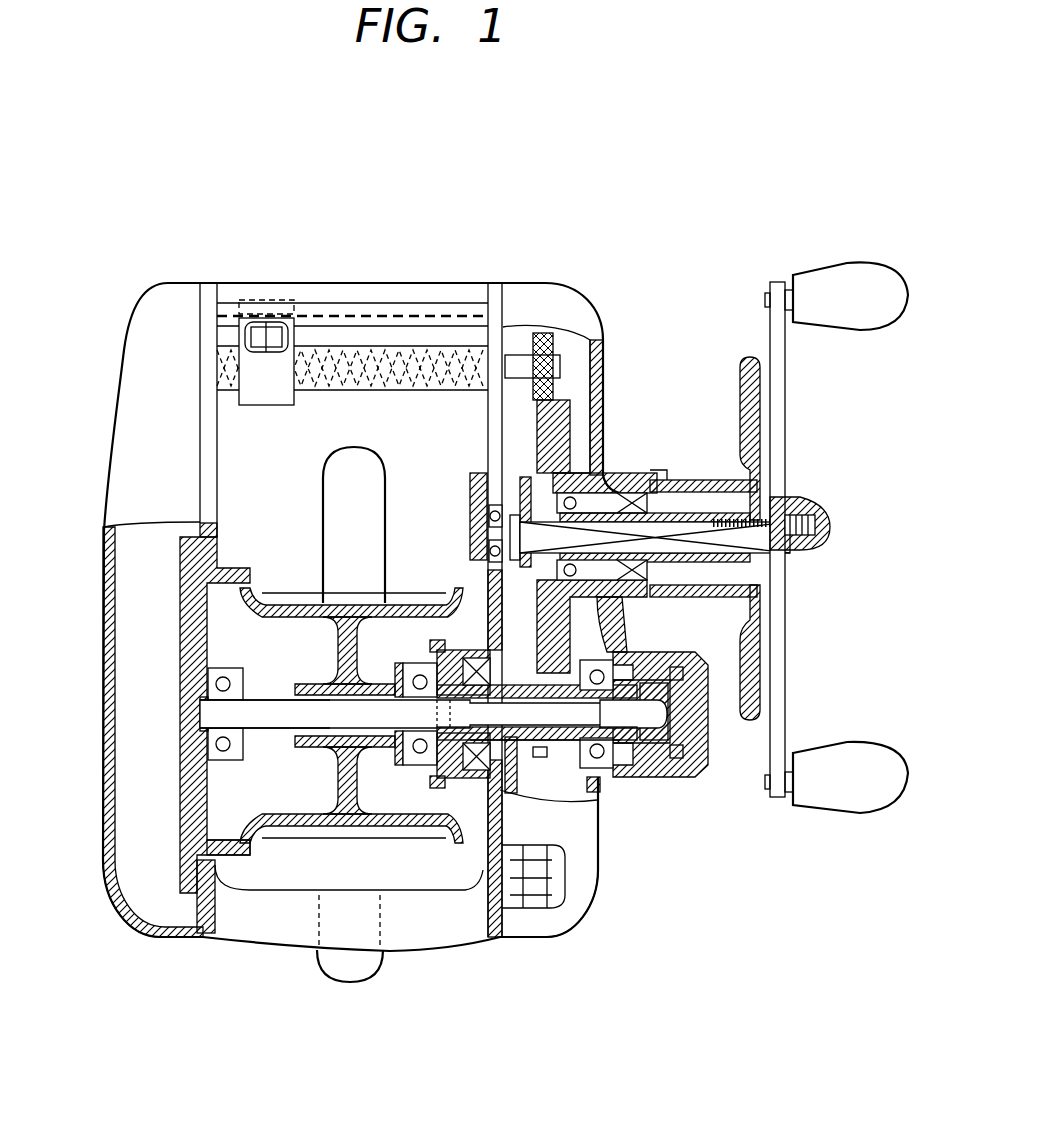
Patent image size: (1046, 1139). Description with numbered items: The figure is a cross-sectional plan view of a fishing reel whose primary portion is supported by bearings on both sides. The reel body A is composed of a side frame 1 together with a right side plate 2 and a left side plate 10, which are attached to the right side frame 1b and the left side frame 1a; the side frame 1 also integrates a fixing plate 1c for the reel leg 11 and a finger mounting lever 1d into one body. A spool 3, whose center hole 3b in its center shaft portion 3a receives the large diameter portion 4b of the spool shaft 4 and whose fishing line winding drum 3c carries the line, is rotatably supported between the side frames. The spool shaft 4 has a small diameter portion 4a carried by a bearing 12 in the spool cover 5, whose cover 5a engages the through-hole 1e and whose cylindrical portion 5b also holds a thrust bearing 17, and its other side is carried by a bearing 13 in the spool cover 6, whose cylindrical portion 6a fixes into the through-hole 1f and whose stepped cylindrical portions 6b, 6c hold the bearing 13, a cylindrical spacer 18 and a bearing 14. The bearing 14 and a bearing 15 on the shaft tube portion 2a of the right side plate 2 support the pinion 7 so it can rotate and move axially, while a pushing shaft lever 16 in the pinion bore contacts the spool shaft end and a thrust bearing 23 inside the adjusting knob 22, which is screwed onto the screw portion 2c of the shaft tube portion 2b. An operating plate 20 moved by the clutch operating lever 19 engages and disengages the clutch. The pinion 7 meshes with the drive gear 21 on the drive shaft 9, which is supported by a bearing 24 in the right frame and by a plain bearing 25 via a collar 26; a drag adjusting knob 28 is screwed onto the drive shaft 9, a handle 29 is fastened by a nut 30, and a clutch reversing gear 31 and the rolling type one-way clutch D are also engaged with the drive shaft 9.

The reel body A is at (218, 258).
The side frame 1 is at (208, 282).
The left side frame 1a is at (200, 300).
The right side frame 1b is at (495, 300).
The fixing plate 1c is at (340, 838).
The finger mounting lever 1d is at (223, 938).
The through-hole 1e is at (200, 560).
The through-hole 1f is at (700, 613).
The right side plate 2 is at (553, 285).
The shaft tube portion 2a is at (588, 893).
The shaft tube portion 2b is at (712, 680).
The screw portion 2c is at (670, 745).
The spool 3 is at (307, 598).
The center shaft portion 3a is at (302, 830).
The center hole 3b is at (283, 697).
The fishing line winding drum 3c is at (352, 596).
The spool shaft 4 is at (265, 745).
The small diameter portion 4a is at (212, 735).
The large diameter portion 4b is at (290, 745).
The spool cover 5 is at (190, 607).
The cover 5a is at (200, 520).
The cylindrical portion 5b is at (210, 780).
The spool cover 6 is at (466, 569).
The cylindrical portion 6a is at (662, 640).
The cylindrical portion 6b is at (420, 772).
The cylindrical portion 6c is at (437, 780).
The pinion 7 is at (543, 762).
The drive shaft 9 is at (697, 515).
The left side plate 10 is at (137, 320).
The reel leg 11 is at (356, 984).
The bearing 12 is at (212, 682).
The bearing 13 is at (400, 590).
The bearing 14 is at (465, 790).
The bearing 15 is at (598, 820).
The pushing shaft lever 16 is at (614, 790).
The thrust bearing 17 is at (200, 710).
The cylindrical spacer 18 is at (433, 596).
The clutch operating lever 19 is at (560, 885).
The operating plate 20 is at (528, 757).
The drive gear 21 is at (573, 305).
The adjusting knob 22 is at (690, 780).
The thrust bearing 23 is at (710, 722).
The bearing 24 is at (487, 585).
The plain bearing 25 is at (633, 570).
The collar 26 is at (663, 500).
The drag adjusting knob 28 is at (750, 355).
The handle 29 is at (787, 377).
The nut 30 is at (832, 527).
The clutch reversing gear 31 is at (497, 500).
The rolling type one-way clutch D is at (607, 480).